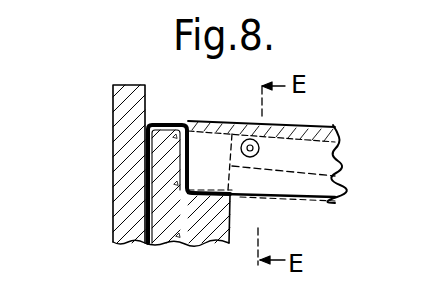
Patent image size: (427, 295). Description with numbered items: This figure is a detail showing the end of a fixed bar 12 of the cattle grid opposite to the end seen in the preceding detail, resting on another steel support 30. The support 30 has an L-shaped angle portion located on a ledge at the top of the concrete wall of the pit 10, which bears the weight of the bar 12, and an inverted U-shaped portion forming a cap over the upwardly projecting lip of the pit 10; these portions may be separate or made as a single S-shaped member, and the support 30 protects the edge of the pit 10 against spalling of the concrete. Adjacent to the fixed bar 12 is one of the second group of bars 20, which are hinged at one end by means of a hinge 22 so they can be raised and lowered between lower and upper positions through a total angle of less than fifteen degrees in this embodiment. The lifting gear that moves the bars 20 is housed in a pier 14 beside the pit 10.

The pit 10 is at (152, 169).
The first group of parallel bars 12 is at (210, 123).
The pier 14 is at (113, 108).
The second group of bars 20 is at (340, 147).
The hinge 22 is at (259, 149).
The steel support 30 is at (207, 200).